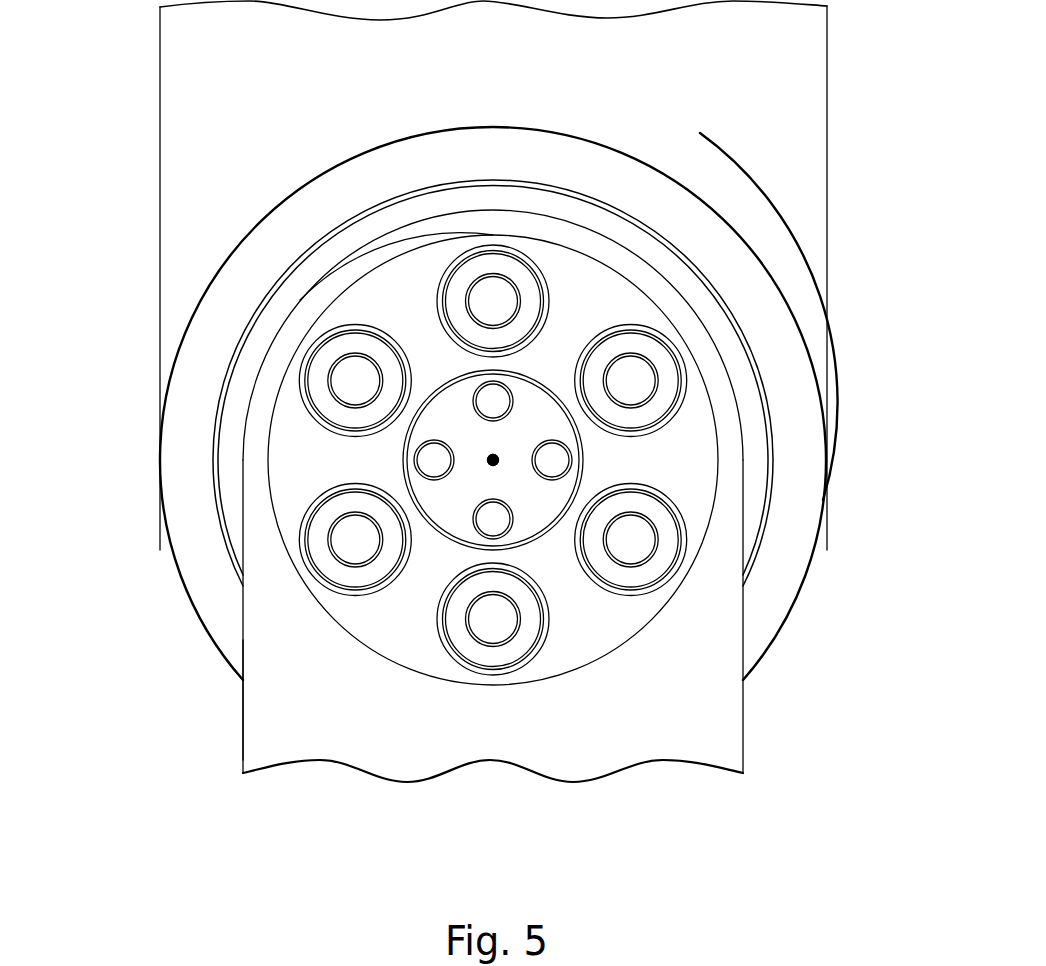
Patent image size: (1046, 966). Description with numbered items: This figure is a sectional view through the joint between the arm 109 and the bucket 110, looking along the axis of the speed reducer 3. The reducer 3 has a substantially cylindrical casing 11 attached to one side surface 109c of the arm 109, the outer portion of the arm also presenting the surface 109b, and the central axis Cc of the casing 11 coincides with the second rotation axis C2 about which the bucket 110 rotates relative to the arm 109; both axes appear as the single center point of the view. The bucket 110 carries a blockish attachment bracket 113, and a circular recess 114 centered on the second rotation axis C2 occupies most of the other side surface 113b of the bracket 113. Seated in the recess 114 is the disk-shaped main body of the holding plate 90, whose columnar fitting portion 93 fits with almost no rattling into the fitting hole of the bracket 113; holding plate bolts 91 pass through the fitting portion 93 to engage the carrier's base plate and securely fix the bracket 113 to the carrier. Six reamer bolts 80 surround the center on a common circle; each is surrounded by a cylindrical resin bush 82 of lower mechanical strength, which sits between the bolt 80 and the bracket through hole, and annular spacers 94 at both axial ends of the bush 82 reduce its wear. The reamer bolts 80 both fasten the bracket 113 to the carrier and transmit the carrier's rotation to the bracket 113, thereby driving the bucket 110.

The speed reducer 3 is at (626, 146).
The casing 11 is at (830, 588).
The reamer bolt 80 is at (509, 279).
The resin bush 82 is at (330, 333).
The holding plate 90 is at (668, 403).
The holding plate bolt 91 is at (433, 439).
The fitting portion 93 is at (583, 455).
The annular spacer 94 is at (359, 332).
The arm 109 is at (160, 68).
The annular surface 109b is at (826, 356).
The side surface of the arm 109c is at (790, 120).
The bucket 110 is at (228, 706).
The attachment bracket 113 is at (243, 746).
The other side surface of the attachment bracket 113b is at (275, 633).
The recess 114 is at (400, 277).
The second rotation axis C2 is at (497, 456).
The central axis of the casing Cc is at (493, 460).